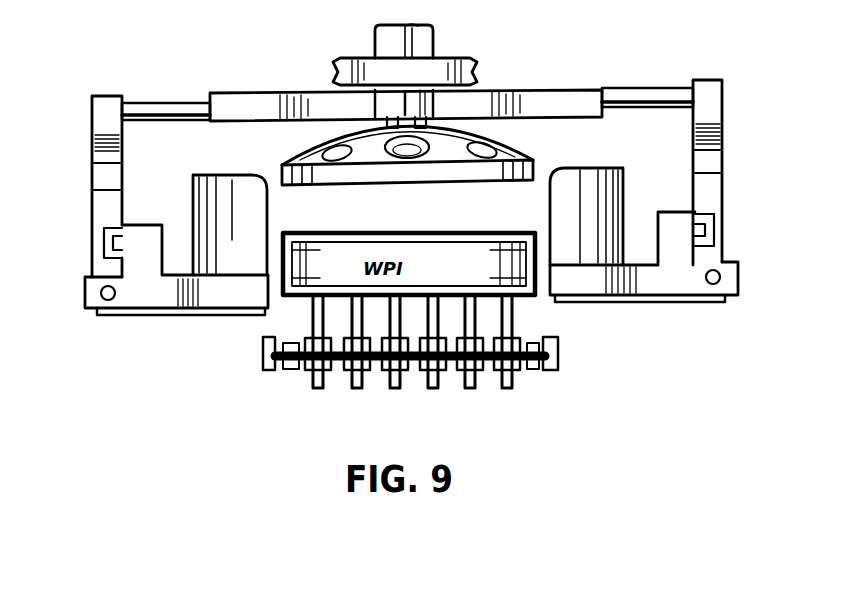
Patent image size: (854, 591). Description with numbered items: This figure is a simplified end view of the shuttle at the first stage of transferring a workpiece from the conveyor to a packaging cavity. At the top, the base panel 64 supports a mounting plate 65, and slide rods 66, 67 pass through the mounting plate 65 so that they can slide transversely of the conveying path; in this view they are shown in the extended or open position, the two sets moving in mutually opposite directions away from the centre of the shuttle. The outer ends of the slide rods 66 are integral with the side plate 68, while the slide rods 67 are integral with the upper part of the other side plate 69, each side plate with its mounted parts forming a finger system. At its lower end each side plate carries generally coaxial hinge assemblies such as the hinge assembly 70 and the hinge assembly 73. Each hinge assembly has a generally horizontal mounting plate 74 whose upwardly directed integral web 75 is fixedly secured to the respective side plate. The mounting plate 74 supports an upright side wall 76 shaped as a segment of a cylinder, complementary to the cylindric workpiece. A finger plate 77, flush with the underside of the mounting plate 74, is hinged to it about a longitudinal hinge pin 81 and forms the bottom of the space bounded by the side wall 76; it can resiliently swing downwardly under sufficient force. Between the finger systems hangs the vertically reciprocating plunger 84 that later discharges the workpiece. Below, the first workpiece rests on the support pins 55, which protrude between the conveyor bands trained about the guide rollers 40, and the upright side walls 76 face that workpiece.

The guide roller 40 is at (525, 368).
The support pin 55 is at (512, 318).
The base panel 64 is at (438, 57).
The mounting plate 65 is at (553, 90).
The slide rod 66 is at (650, 88).
The slide rod 67 is at (177, 99).
The side plate 68 is at (722, 165).
The side plate 69 is at (100, 182).
The hinge assembly 70 is at (722, 312).
The hinge assembly 73 is at (128, 328).
The mounting plate 74 is at (238, 296).
The web 75 is at (145, 232).
The upright side wall 76 is at (228, 178).
The finger plate 77 is at (167, 318).
The hinge pin 81 is at (101, 293).
The plunger 84 is at (352, 186).